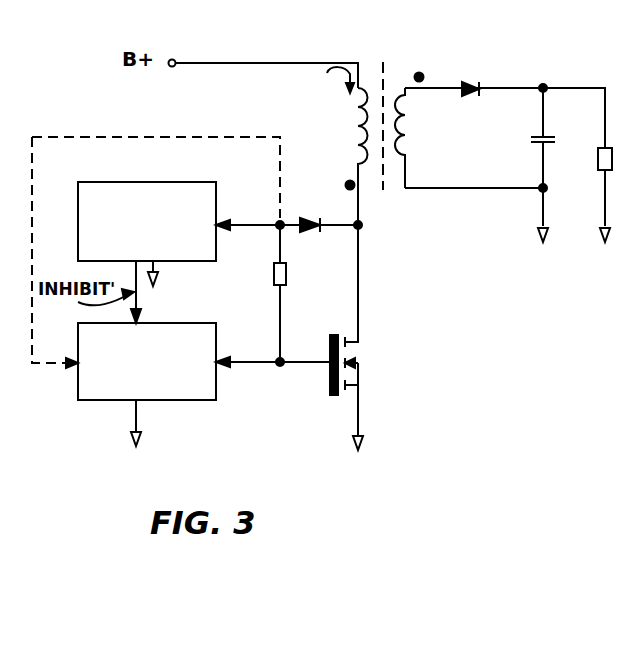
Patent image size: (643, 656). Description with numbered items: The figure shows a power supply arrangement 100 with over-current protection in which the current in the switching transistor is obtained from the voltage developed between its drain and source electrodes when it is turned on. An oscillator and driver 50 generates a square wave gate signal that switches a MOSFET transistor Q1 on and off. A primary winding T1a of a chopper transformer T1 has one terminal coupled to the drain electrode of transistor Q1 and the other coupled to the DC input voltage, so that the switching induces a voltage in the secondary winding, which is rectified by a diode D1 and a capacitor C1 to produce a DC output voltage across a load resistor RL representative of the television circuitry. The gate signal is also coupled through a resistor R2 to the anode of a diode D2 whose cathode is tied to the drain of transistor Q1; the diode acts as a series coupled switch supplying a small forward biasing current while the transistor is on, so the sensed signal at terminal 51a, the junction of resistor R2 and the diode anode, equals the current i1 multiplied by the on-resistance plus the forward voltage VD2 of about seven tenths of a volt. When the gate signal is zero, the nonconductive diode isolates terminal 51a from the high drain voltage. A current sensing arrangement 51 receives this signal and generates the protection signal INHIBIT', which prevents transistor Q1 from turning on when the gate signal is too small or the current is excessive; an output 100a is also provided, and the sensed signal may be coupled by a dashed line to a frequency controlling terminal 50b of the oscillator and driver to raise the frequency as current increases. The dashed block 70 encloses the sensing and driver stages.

The controller dashed block 70 is at (85, 137).
The current sensing arrangement 51 is at (78, 226).
The terminal 51a is at (219, 222).
The current sensing output 100a is at (219, 308).
The oscillator and driver 50 is at (178, 400).
The frequency controlling terminal 50b is at (76, 365).
The power supply arrangement 100 is at (491, 453).
The chopper transformer T1 is at (385, 138).
The primary winding T1a is at (356, 147).
The current i1 is at (339, 91).
The diode D1 is at (471, 72).
The capacitor C1 is at (553, 163).
The resistor RL is at (618, 182).
The diode D2 is at (370, 226).
The resistor R2 is at (307, 293).
The MOSFET transistor Q1 is at (391, 422).
The voltage VD2 is at (362, 252).